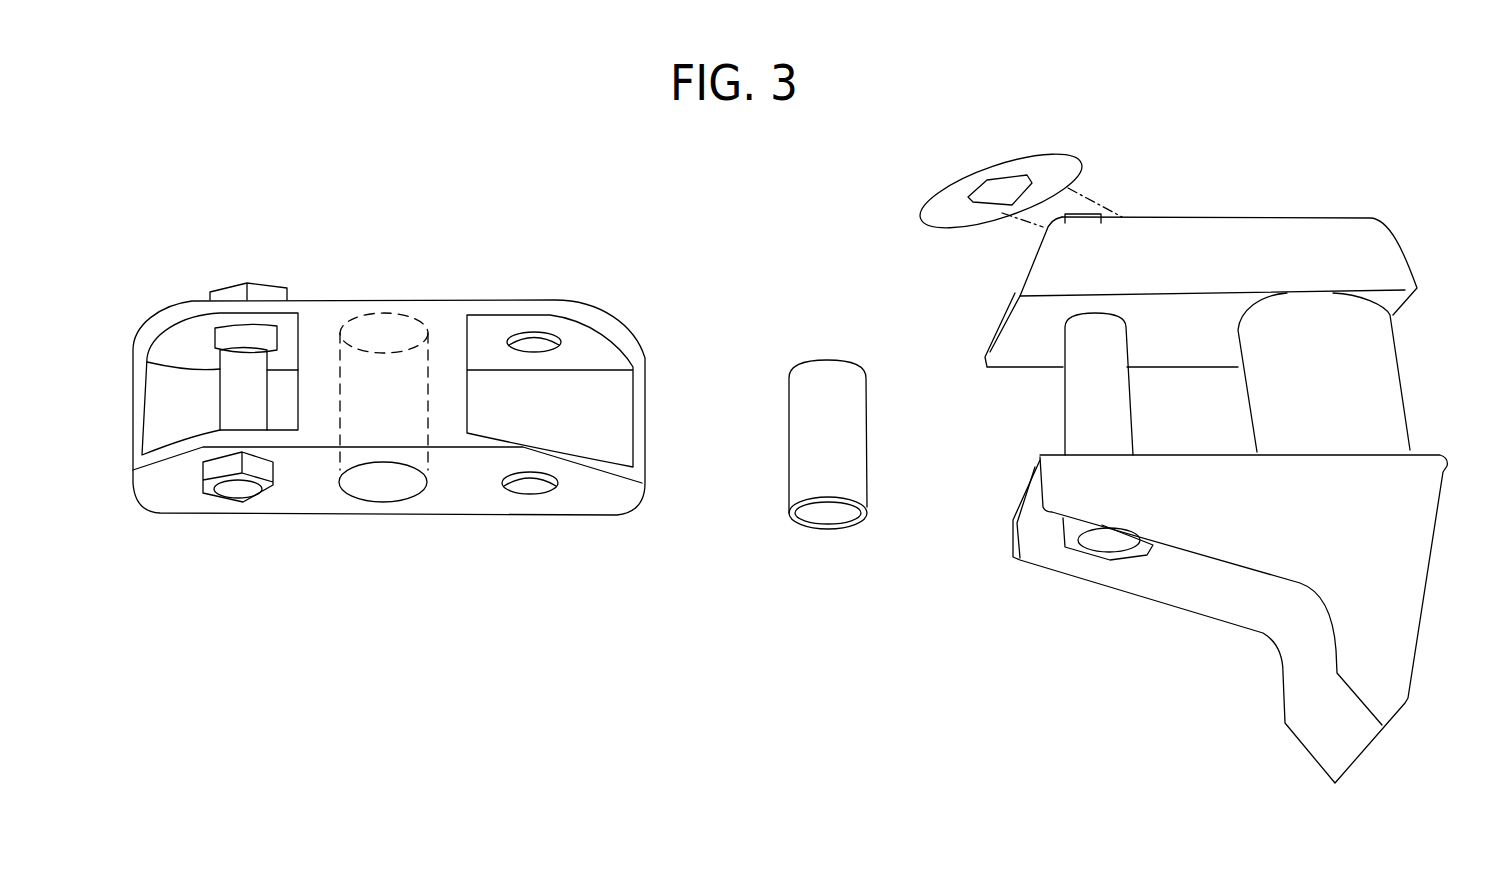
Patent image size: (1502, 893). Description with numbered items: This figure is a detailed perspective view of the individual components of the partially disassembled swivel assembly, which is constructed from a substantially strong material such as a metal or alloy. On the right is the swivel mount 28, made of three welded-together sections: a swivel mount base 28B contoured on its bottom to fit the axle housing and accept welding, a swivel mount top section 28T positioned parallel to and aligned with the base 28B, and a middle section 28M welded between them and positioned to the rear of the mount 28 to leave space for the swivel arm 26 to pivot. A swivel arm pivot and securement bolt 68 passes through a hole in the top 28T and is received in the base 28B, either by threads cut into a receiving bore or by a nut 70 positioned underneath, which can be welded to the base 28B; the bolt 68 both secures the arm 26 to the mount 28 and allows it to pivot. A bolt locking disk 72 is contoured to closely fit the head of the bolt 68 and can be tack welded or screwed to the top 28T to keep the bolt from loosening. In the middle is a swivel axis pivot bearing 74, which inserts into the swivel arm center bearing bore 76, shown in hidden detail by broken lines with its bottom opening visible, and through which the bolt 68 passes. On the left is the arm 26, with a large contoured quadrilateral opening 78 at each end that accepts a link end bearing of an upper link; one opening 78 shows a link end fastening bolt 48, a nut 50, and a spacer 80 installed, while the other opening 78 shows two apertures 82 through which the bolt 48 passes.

The swivel arm 26 is at (420, 372).
The swivel mount 28 is at (1216, 453).
The swivel mount top section 28T is at (1235, 267).
The swivel mount middle section 28M is at (1355, 387).
The swivel mount base 28B is at (1312, 530).
The link end fastening bolt 48 is at (235, 385).
The nut 50 is at (240, 503).
The swivel arm pivot and securement bolt 68 is at (1082, 390).
The nut 70 is at (1097, 553).
The bolt locking disk 72 is at (945, 190).
The swivel axis pivot bearing 74 is at (825, 368).
The swivel arm center bearing bore 76 is at (388, 497).
The quadrilateral opening 78 is at (617, 420).
The spacer 80 is at (215, 335).
The apertures 82 is at (530, 497).